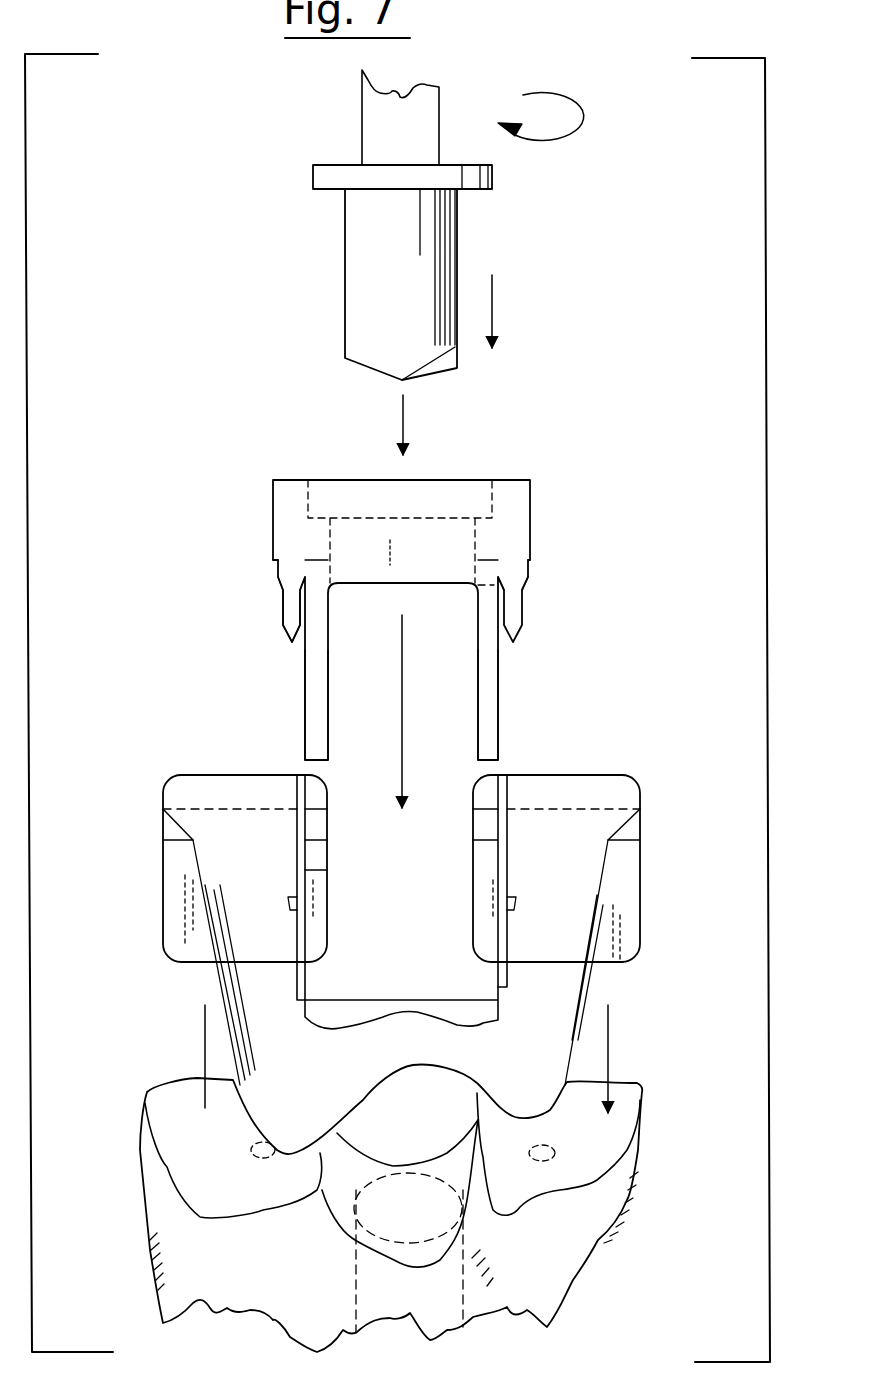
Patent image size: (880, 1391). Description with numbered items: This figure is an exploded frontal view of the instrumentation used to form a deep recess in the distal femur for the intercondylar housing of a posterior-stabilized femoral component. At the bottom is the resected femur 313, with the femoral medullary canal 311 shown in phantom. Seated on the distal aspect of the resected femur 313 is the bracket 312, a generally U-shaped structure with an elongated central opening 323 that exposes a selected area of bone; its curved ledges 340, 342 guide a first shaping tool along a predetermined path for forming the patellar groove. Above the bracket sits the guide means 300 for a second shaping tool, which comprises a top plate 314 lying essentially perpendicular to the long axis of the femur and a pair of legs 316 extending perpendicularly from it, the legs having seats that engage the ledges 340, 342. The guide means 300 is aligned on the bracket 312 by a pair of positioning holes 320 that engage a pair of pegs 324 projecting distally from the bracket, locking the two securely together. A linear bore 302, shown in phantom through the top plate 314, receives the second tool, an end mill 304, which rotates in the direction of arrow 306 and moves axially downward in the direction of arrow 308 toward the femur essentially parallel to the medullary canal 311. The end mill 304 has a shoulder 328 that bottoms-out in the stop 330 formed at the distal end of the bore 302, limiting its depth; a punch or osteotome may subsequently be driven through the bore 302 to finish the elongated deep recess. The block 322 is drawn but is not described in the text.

The guide means 300 is at (425, 606).
The linear bore 302 is at (415, 563).
The end mill 304 is at (278, 246).
The arrow indicating direction of rotation 306 is at (596, 125).
The arrow indicating axial direction 308 is at (492, 287).
The femoral medullary canal 311 is at (356, 1270).
The bracket 312 is at (343, 906).
The resected femur 313 is at (598, 1240).
The top plate 314 is at (468, 480).
The legs 316 is at (315, 695).
The positioning holes 320 is at (280, 775).
The right clamp block 322 is at (520, 775).
The elongated central opening 323 is at (437, 950).
The pegs 324 is at (285, 609).
The shoulder 328 is at (481, 200).
The stop 330 is at (318, 480).
The curved ledge 340 is at (305, 870).
The curved ledge 342 is at (497, 850).